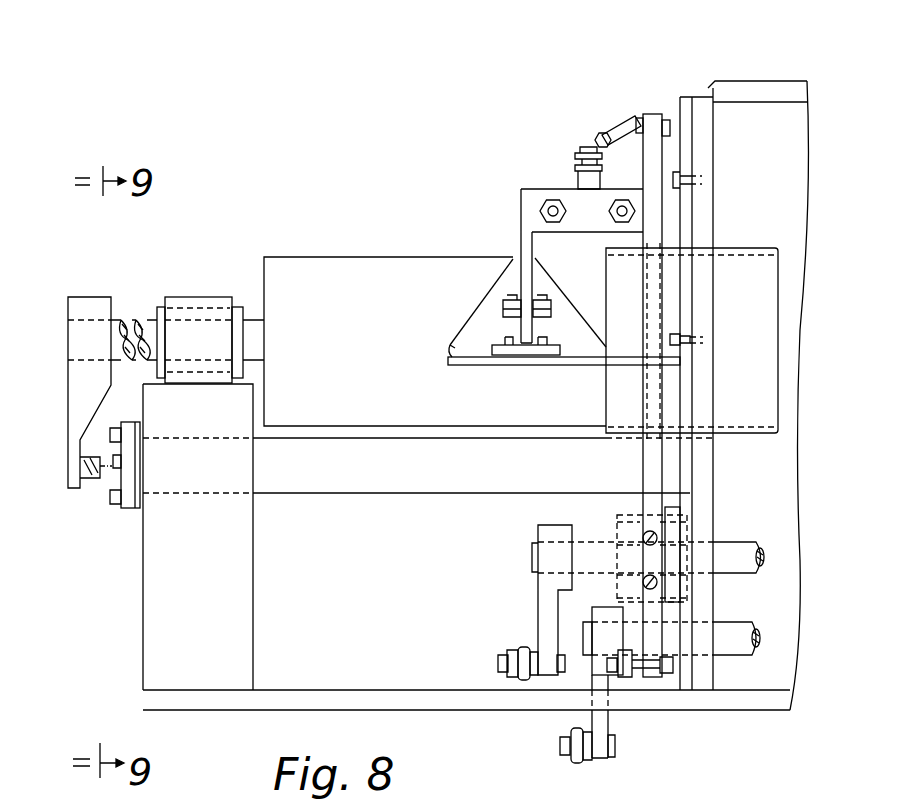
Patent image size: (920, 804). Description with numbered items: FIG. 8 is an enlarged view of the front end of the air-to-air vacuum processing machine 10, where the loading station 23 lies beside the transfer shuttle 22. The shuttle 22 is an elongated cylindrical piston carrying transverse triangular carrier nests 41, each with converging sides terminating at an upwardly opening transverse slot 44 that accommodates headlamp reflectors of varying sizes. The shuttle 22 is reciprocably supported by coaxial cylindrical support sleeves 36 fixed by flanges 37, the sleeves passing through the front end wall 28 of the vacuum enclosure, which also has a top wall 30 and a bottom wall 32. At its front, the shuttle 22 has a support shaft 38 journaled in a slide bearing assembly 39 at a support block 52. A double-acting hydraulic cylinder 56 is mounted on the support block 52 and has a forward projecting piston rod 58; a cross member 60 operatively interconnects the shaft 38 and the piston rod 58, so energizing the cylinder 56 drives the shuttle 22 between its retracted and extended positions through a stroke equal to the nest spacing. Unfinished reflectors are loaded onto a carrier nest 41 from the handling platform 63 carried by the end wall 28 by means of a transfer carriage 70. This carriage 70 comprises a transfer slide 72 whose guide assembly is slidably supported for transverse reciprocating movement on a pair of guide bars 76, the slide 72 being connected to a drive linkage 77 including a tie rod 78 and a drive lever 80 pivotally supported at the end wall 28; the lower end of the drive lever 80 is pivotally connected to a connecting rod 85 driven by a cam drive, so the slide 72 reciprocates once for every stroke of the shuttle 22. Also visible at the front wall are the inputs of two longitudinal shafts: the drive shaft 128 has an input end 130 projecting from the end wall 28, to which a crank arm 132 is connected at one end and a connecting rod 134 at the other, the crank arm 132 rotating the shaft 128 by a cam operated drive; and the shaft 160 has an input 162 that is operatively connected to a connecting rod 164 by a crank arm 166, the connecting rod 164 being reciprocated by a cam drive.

The air-to-air vacuum processing machine 10 is at (701, 72).
The transfer shuttle 22 is at (395, 248).
The loading station 23 is at (477, 366).
The front end wall 28 is at (697, 116).
The top wall 30 is at (758, 90).
The bottom wall 32 is at (760, 700).
The support sleeves 36 is at (737, 258).
The flanges 37 is at (665, 388).
The support shafts 38 is at (146, 325).
The slide bearing assembly 39 is at (198, 308).
The carrier nests 41 is at (476, 319).
The transverse slot 44 is at (528, 262).
The support block 52 is at (240, 652).
The hydraulic cylinder 56 is at (296, 482).
The piston rod 58 is at (88, 480).
The cross member 60 is at (88, 392).
The handling platform 63 is at (450, 350).
The transfer carriage 70 is at (615, 96).
The transfer slide 72 is at (520, 212).
The guide bars 76 is at (614, 210).
The drive linkage 77 is at (606, 132).
The tie rod 78 is at (598, 140).
The drive lever 80 is at (655, 157).
The connecting rod 85 is at (618, 667).
The drive shaft 128 is at (727, 552).
The input end 130 is at (533, 560).
The crank arm 132 is at (548, 598).
The connecting rod 134 is at (524, 655).
The shaft 160 is at (727, 635).
The input 162 is at (588, 640).
The connecting rod 164 is at (560, 745).
The crank arm 166 is at (600, 722).